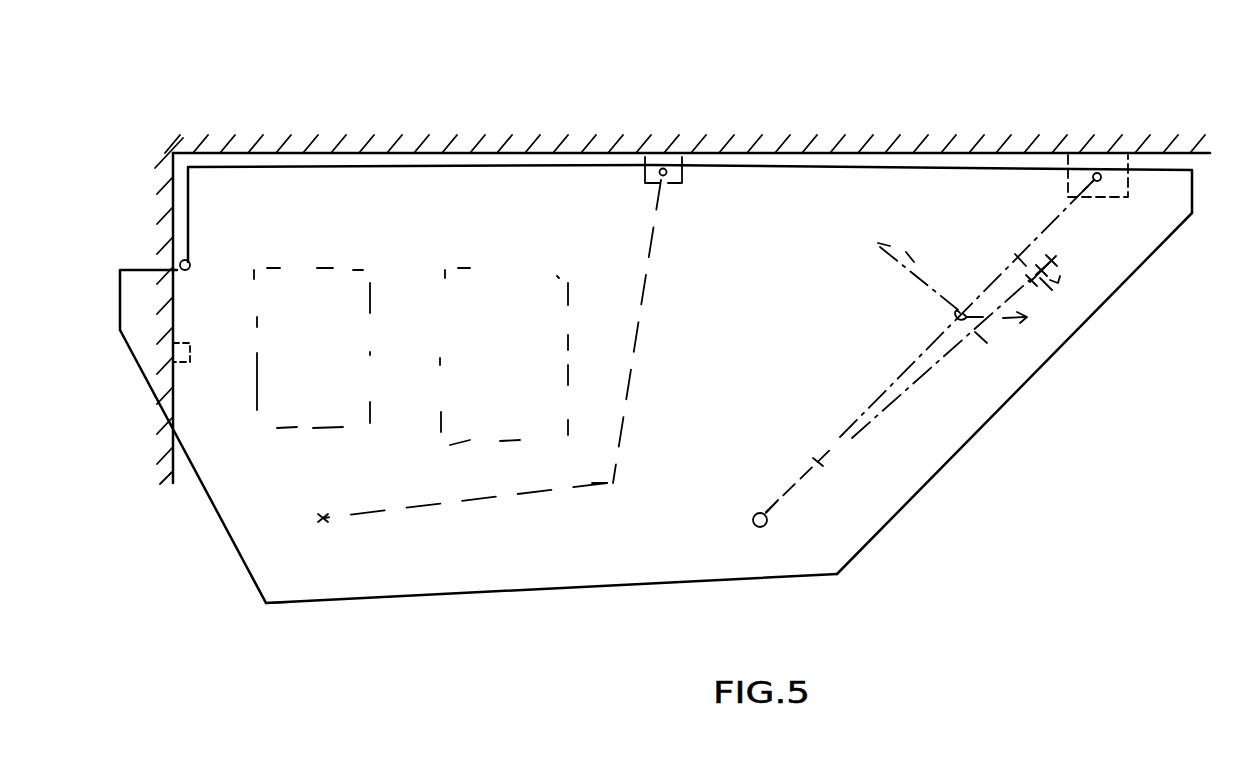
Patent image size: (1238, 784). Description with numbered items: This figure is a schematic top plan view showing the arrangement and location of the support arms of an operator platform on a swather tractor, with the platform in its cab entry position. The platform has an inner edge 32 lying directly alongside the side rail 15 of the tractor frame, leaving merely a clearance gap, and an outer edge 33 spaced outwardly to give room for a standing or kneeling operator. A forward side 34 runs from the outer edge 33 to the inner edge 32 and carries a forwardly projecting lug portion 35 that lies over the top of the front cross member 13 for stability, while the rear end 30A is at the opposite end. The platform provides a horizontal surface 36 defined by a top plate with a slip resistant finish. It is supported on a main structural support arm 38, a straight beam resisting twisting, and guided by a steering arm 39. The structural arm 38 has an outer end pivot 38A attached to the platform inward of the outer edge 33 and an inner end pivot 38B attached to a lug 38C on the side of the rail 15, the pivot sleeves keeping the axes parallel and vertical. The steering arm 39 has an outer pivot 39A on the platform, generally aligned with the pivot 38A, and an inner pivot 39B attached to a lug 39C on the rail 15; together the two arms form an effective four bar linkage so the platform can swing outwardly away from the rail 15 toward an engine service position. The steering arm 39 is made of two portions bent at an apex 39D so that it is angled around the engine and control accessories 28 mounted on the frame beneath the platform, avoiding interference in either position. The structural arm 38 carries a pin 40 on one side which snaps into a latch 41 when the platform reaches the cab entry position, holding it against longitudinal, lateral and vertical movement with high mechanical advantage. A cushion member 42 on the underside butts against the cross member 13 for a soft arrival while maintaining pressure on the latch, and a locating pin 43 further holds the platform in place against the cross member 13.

The cross member 13 is at (150, 207).
The side rail 15 is at (433, 153).
The inner edge 32 is at (545, 166).
The control and drive components 28 is at (342, 230).
The rear end 30A is at (955, 450).
The outer edge 33 is at (455, 593).
The forward side 34 is at (200, 483).
The lug portion 35 is at (131, 306).
The horizontal surface 36 is at (265, 497).
The main structural support arm 38 is at (857, 418).
The outer end pivot 38A is at (753, 514).
The inner end pivot 38B is at (1110, 172).
The lug 38C is at (1095, 172).
The steering arm 39 is at (545, 490).
The outer pivot 39A is at (347, 470).
The inner pivot 39B is at (667, 172).
The lug 39C is at (650, 175).
The apex 39D is at (613, 470).
The pin 40 is at (1055, 271).
The latch 41 is at (1057, 272).
The cushion member 42 is at (190, 355).
The locating pin 43 is at (190, 268).